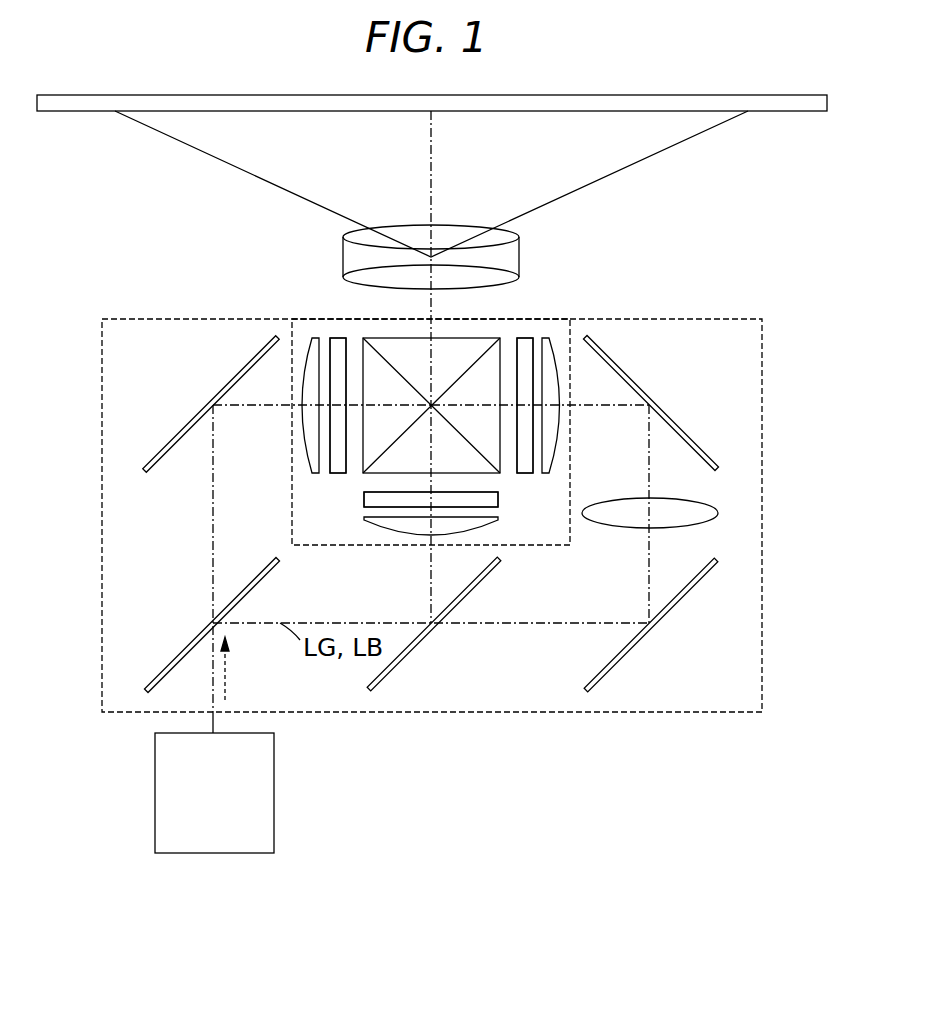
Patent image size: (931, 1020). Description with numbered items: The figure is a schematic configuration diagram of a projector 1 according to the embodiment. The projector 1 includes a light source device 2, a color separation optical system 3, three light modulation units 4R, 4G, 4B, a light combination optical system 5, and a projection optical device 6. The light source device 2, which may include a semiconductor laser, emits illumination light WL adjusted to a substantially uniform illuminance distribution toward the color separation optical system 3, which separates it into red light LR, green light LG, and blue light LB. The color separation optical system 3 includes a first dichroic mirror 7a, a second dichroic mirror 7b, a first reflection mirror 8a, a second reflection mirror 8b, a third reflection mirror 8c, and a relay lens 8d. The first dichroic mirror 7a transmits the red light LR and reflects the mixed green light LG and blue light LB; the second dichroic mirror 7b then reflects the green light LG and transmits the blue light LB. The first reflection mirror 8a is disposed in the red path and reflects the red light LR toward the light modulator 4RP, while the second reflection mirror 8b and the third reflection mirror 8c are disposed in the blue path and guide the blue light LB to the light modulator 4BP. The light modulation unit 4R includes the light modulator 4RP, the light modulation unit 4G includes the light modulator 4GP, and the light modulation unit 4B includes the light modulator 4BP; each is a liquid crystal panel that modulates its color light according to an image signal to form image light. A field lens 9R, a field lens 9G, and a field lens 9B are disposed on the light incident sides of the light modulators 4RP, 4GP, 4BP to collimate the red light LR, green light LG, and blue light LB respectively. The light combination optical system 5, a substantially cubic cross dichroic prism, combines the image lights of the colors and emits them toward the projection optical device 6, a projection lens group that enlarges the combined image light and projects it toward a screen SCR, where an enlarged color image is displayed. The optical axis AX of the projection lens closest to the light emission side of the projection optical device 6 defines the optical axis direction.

The projector 1 is at (770, 294).
The light source device 2 is at (274, 790).
The color separation optical system 3 is at (102, 455).
The light modulation unit 4R is at (334, 331).
The light modulation unit 4G is at (506, 493).
The light modulation unit 4B is at (523, 331).
The light modulator 4RP is at (332, 345).
The light modulator 4GP is at (364, 500).
The light modulator 4BP is at (520, 345).
The light combination optical system 5 is at (455, 346).
The projection optical device 6 is at (415, 237).
The first dichroic mirror 7a is at (178, 655).
The second dichroic mirror 7b is at (408, 655).
The first reflection mirror 8a is at (188, 420).
The second reflection mirror 8b is at (675, 608).
The third reflection mirror 8c is at (675, 418).
The relay lens 8d is at (708, 510).
The field lens 9R is at (312, 350).
The field lens 9G is at (364, 526).
The field lens 9B is at (552, 350).
The optical axis AX is at (432, 157).
The screen SCR is at (793, 111).
The illumination light WL is at (228, 672).
The red light LR is at (213, 540).
The green light LG is at (431, 578).
The blue light LB is at (649, 575).